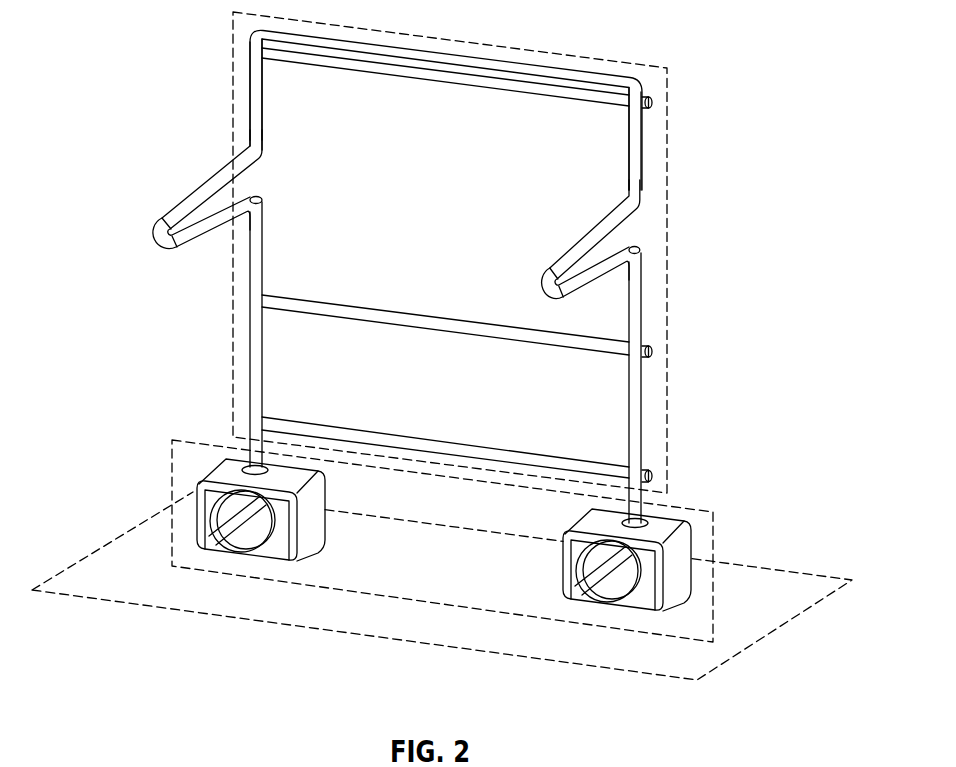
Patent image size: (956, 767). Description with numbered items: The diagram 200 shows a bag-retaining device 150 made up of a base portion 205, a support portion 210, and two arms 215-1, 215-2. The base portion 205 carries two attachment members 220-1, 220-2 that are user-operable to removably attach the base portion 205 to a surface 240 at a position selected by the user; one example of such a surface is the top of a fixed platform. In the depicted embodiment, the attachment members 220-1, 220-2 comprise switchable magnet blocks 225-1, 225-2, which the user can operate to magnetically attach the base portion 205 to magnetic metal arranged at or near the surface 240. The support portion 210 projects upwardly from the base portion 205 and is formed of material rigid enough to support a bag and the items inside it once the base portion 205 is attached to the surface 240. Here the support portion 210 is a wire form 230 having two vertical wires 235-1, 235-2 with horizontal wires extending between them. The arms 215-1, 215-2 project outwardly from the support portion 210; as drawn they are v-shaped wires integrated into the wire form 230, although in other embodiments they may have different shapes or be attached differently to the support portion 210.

The diagram 200 is at (767, 33).
The bag-retaining device 150 is at (710, 185).
The base portion 205 is at (715, 548).
The support portion 210 is at (667, 378).
The arm 215-1 is at (157, 248).
The arm 215-2 is at (553, 252).
The attachment member 220-1 is at (203, 545).
The attachment member 220-2 is at (647, 590).
The switchable magnet block 225-1 is at (200, 590).
The switchable magnet block 225-2 is at (605, 638).
The wire form 230 is at (637, 305).
The vertical wire 235-1 is at (257, 367).
The vertical wire 235-2 is at (628, 393).
The surface 240 is at (135, 527).